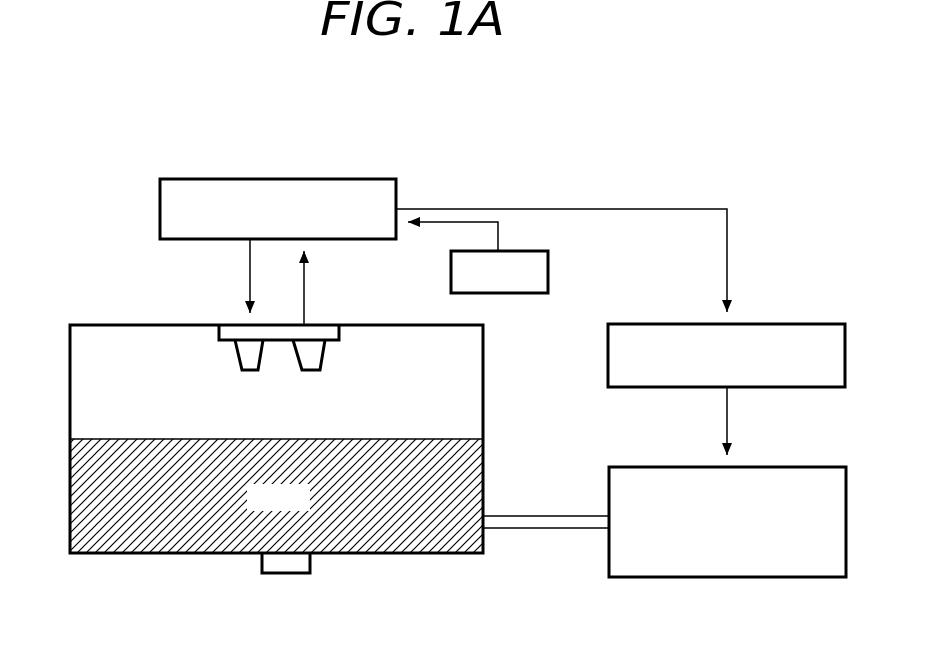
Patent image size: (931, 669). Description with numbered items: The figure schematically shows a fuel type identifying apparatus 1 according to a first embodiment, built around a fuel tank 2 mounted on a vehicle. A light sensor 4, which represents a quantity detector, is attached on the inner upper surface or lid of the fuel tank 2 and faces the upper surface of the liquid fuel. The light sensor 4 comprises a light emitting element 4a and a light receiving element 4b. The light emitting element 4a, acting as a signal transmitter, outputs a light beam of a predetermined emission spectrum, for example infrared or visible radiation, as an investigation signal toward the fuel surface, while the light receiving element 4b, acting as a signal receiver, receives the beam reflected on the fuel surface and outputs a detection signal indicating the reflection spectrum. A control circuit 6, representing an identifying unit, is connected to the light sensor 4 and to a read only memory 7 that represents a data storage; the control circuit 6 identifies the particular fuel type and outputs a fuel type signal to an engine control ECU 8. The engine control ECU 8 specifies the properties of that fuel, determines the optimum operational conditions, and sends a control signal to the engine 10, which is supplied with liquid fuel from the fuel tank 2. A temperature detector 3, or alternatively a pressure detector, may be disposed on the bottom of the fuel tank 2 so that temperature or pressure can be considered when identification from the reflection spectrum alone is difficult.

The fuel type identifying apparatus 1 is at (206, 124).
The fuel tank 2 is at (82, 325).
The temperature detector 3 is at (300, 574).
The light sensor 4 is at (223, 333).
The light emitting element 4a is at (248, 348).
The light receiving element 4b is at (312, 352).
The control circuit 6 is at (358, 180).
The read only memory (ROM) 7 is at (551, 265).
The engine control ECU 8 is at (822, 324).
The engine 10 is at (822, 467).